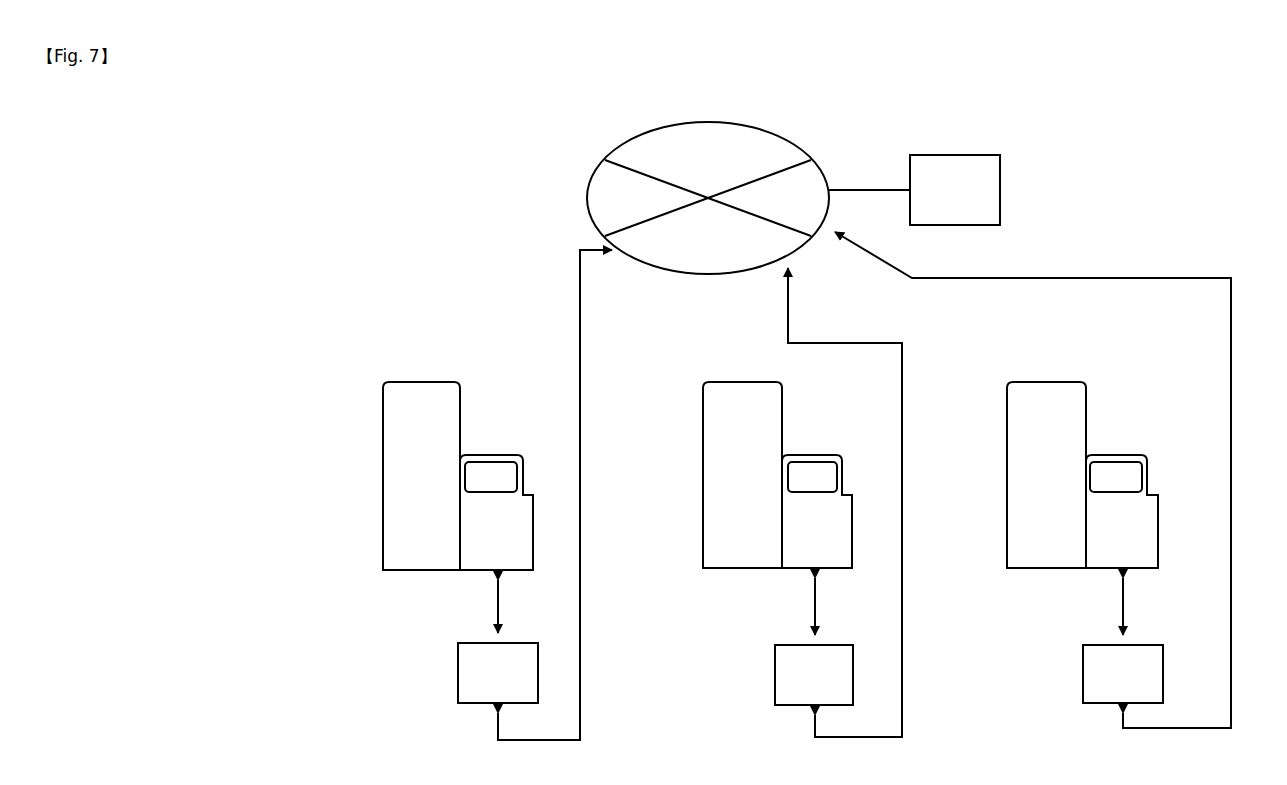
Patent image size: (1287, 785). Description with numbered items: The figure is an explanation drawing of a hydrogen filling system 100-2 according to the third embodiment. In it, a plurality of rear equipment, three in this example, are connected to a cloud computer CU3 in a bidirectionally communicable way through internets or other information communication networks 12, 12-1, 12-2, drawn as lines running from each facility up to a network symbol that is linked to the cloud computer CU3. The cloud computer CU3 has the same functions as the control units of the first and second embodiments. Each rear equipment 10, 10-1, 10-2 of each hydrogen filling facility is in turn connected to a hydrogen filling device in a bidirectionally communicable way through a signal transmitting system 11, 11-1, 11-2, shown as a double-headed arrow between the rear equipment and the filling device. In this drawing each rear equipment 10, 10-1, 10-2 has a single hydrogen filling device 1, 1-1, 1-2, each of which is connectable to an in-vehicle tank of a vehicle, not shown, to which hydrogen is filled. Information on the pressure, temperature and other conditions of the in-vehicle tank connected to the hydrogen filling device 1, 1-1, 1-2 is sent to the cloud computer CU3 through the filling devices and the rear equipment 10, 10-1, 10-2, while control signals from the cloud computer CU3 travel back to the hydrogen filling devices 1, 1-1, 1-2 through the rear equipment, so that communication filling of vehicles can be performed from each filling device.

The hydrogen filling system 100-2 is at (1062, 134).
The cloud computer CU3 is at (920, 153).
The hydrogen filling device 1 is at (1077, 383).
The hydrogen filling device 1-1 is at (710, 383).
The hydrogen filling device 1-2 is at (398, 383).
The rear equipment 10 is at (1093, 647).
The rear equipment 10-1 is at (780, 647).
The rear equipment 10-2 is at (468, 645).
The signal transmitting system 11 is at (1126, 623).
The signal transmitting system 11-1 is at (818, 622).
The signal transmitting system 11-2 is at (537, 612).
The information communication network 12 is at (1232, 460).
The information communication network 12-1 is at (903, 445).
The information communication network 12-2 is at (581, 430).